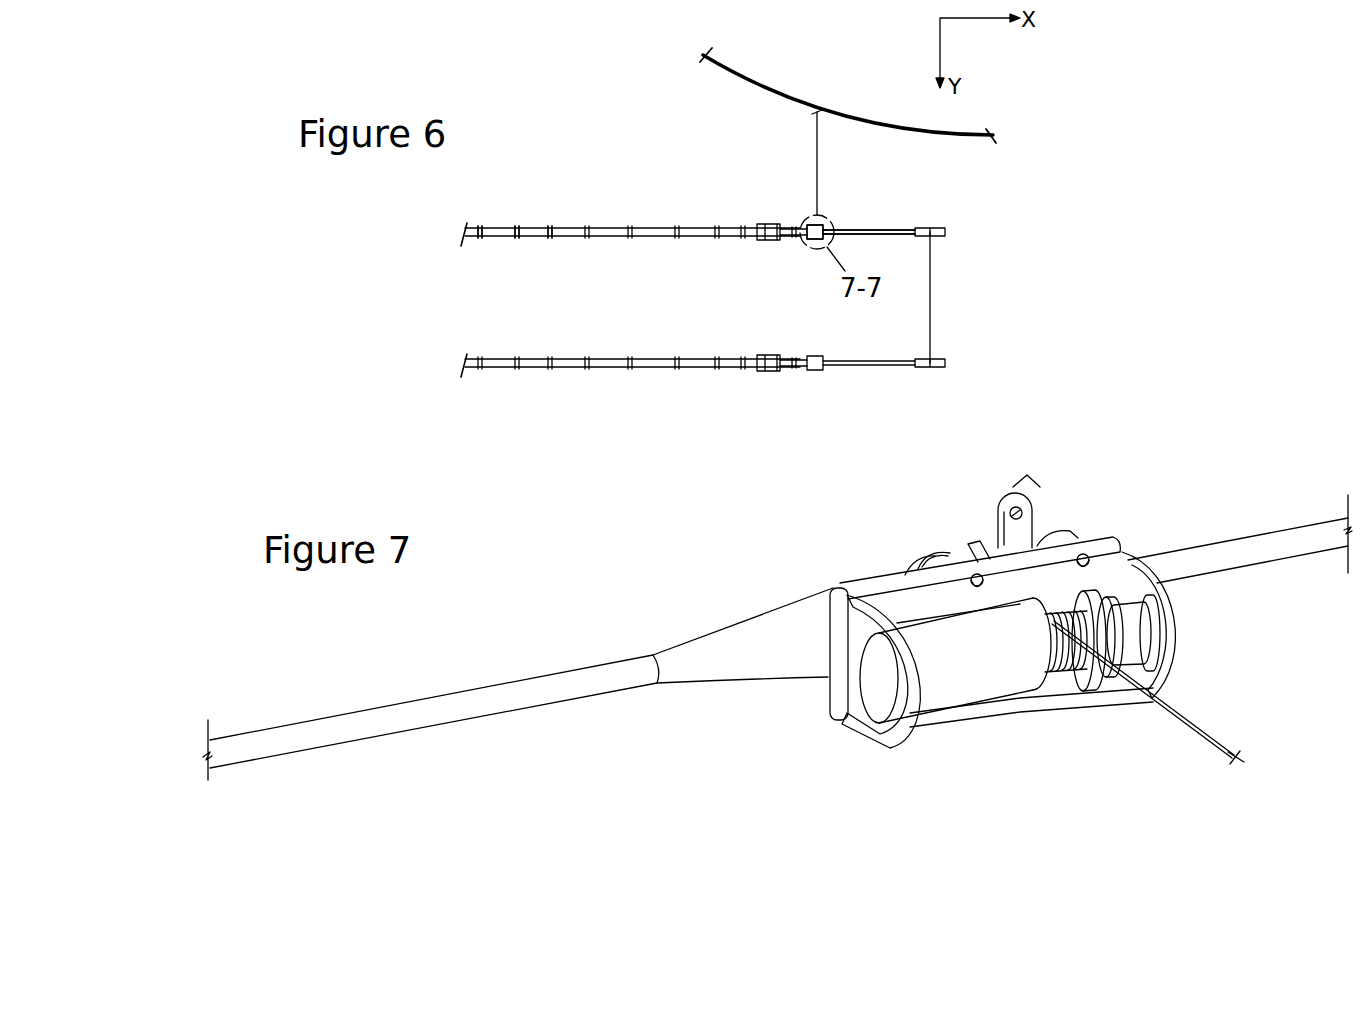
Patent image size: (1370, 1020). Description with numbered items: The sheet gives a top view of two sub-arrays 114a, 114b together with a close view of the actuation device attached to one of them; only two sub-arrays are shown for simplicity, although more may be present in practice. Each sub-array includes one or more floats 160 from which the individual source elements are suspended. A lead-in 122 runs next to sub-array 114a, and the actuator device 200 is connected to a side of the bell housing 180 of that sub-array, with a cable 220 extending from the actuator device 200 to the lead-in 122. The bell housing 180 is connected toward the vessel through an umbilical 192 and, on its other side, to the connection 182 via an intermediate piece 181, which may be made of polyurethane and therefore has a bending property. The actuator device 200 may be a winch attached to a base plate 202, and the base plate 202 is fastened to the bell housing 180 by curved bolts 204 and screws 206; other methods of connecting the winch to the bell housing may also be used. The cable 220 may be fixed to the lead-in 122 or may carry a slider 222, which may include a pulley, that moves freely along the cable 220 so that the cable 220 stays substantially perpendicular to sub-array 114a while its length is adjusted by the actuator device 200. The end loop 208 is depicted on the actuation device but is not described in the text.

In FIG. 6, the sub-array 114a is at (500, 248).
In FIG. 6, the sub-array 114b is at (500, 379).
In FIG. 6, the float 160 is at (567, 226).
In FIG. 6, the bell housing 180 is at (806, 228).
In FIG. 7, the bell housing 180 is at (1028, 480).
In FIG. 7, the intermediate piece 181 is at (757, 643).
In FIG. 7, the connection 182 is at (460, 710).
In FIG. 6, the umbilical 192 is at (880, 230).
In FIG. 6, the actuator device 200 is at (825, 226).
In FIG. 7, the actuator device 200 is at (1005, 680).
In FIG. 7, the base plate 202 is at (1043, 533).
In FIG. 7, the curved bolts 204 is at (938, 556).
In FIG. 7, the screws 206 is at (973, 543).
In FIG. 7, the end loop 208 is at (1167, 643).
In FIG. 6, the cable 220 is at (815, 154).
In FIG. 7, the cable 220 is at (1200, 728).
In FIG. 6, the slider 222 is at (820, 111).
In FIG. 6, the lead-in 122 is at (748, 83).